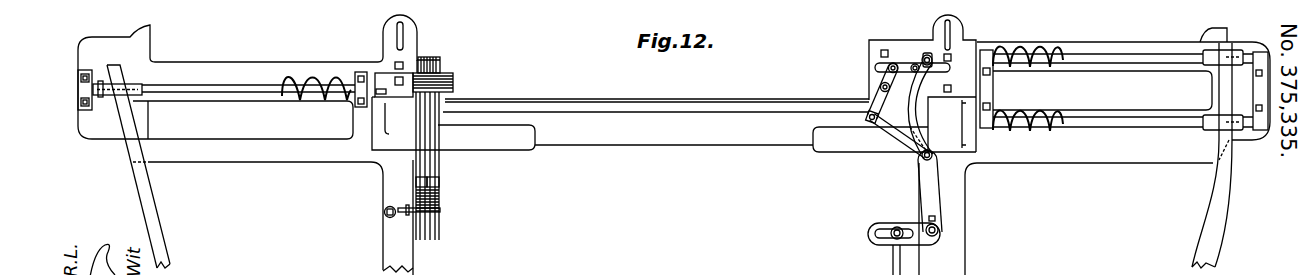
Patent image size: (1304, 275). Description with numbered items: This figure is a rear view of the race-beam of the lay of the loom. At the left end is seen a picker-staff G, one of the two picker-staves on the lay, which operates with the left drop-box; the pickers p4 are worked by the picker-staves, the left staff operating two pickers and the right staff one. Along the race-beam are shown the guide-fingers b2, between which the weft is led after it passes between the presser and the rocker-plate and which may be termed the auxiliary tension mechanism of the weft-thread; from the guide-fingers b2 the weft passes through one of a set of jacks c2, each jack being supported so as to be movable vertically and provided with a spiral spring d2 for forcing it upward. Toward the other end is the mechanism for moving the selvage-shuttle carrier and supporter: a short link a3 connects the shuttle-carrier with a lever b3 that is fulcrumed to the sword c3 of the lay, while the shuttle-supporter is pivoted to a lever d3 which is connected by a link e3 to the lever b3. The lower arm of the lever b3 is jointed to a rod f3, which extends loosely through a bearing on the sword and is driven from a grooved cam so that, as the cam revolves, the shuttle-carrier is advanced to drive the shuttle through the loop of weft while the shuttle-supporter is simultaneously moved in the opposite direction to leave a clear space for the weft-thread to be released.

The pickers p4 is at (136, 82).
The picker-staff G is at (669, 155).
The guide-fingers b2 is at (442, 74).
The jacks c2 is at (434, 166).
The spiral spring d2 is at (420, 197).
The short link a3 is at (922, 59).
The lever d3 is at (880, 88).
The link e3 is at (900, 136).
The lever b3 is at (905, 197).
The sword c3 is at (948, 219).
The rod f3 is at (902, 260).